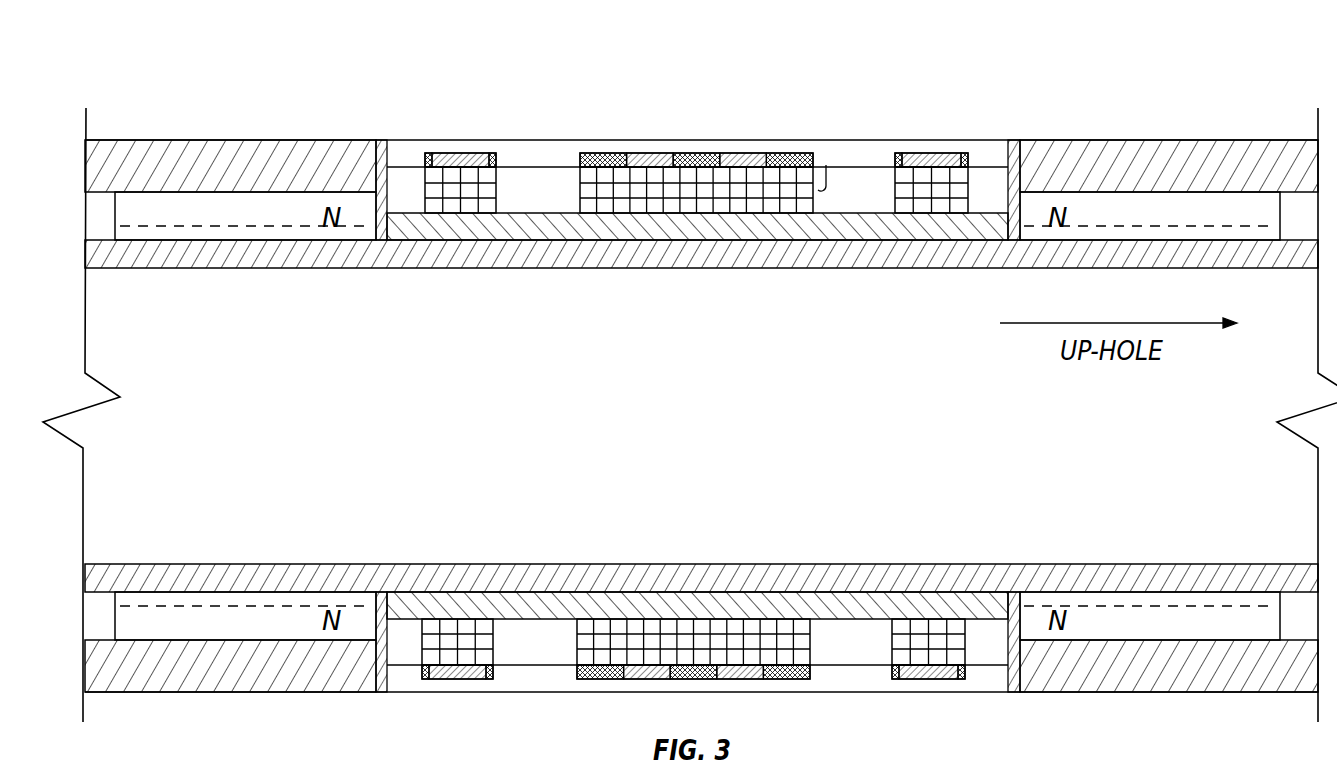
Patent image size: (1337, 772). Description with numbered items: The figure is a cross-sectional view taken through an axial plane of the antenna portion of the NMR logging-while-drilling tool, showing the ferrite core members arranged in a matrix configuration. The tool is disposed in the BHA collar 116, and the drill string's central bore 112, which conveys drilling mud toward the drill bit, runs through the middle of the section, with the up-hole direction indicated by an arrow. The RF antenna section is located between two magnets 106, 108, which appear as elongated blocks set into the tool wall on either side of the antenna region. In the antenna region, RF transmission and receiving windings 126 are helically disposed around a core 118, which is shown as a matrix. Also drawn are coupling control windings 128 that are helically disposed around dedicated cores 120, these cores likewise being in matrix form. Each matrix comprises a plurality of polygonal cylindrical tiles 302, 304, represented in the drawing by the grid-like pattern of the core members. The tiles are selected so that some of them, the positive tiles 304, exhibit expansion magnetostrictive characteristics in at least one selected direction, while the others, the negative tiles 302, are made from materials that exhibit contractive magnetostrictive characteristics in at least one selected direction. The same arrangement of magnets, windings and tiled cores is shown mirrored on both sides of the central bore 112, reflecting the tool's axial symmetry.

The magnet 106 is at (1172, 218).
The magnet 108 is at (197, 218).
The central bore 112 is at (693, 364).
The BHA collar 116 is at (1268, 172).
The core 118 is at (826, 165).
The dedicated core 120 is at (497, 195).
The RF transmission and receiving windings 126 is at (708, 145).
The coupling control windings 128 is at (476, 146).
The negative tile 302 is at (433, 175).
The positive tile 304 is at (448, 175).